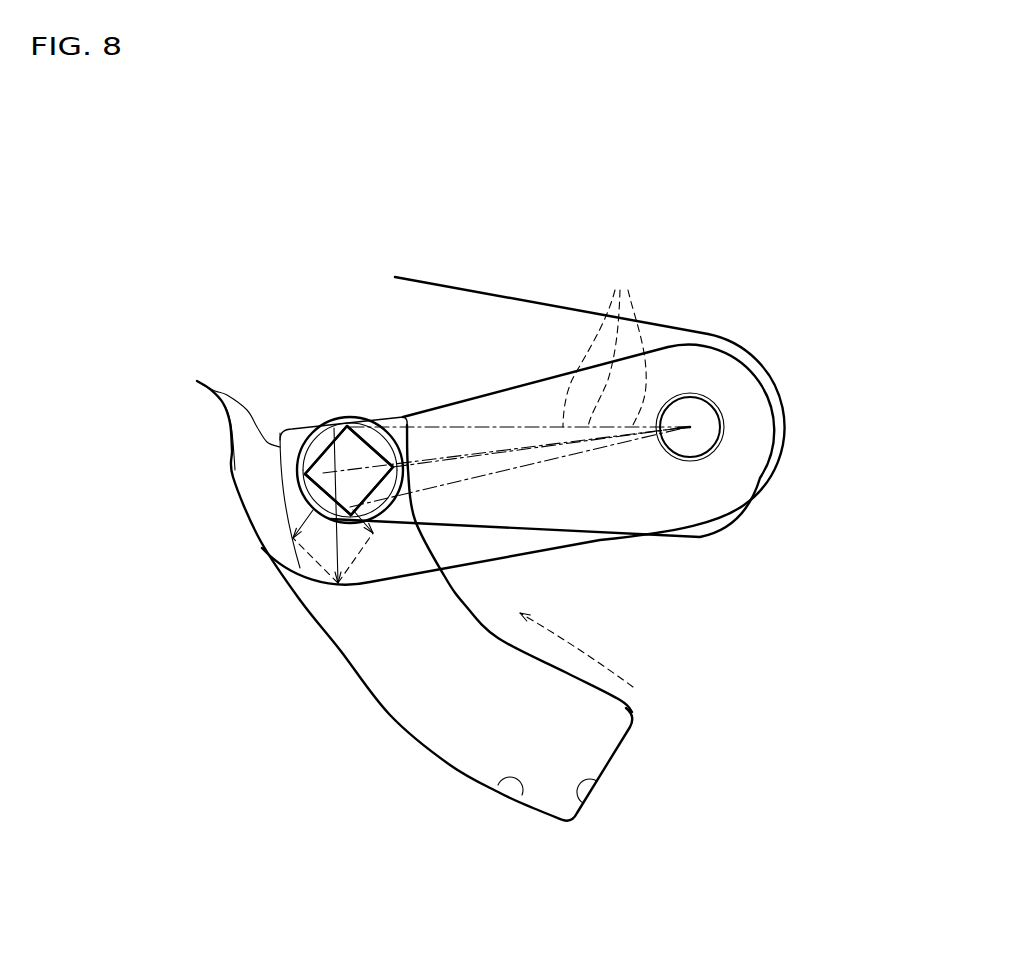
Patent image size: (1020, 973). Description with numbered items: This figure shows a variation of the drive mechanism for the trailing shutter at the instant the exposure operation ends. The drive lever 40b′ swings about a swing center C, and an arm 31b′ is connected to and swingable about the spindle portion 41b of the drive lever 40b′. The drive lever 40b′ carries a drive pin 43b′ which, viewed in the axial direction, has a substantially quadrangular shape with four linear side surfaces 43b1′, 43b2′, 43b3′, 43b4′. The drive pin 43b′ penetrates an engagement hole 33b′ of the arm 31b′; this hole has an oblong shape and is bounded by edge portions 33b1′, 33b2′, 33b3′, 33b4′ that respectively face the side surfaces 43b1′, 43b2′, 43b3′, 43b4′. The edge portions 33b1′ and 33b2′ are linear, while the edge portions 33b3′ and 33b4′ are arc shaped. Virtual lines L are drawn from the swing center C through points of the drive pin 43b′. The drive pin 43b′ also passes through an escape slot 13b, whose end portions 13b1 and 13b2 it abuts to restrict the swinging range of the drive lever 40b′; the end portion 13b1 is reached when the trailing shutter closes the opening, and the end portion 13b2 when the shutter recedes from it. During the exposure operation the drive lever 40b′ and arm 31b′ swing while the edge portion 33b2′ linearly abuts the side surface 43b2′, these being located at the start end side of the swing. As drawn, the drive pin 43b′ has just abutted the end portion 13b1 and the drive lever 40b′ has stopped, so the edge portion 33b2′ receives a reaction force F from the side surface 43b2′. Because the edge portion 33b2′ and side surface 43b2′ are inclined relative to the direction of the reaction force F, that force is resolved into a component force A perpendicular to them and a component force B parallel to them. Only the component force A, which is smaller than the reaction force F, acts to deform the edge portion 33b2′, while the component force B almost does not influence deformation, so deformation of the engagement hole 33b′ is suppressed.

The escape slot 13b is at (523, 800).
The end portion 13b1 is at (200, 387).
The end portion 13b2 is at (587, 803).
The arm 31b′ is at (220, 407).
The drive lever 40b′ is at (672, 343).
The engagement hole 33b′ is at (433, 420).
The edge portion 33b1′ is at (380, 417).
The edge portion 33b2′ is at (313, 477).
The edge portion 33b3′ is at (395, 468).
The edge portion 33b4′ is at (298, 462).
The drive pin 43b′ is at (357, 417).
The side surface 43b1′ is at (398, 417).
The side surface 43b2′ is at (317, 483).
The side surface 43b3′ is at (370, 512).
The side surface 43b4′ is at (340, 427).
The spindle portion 41b is at (713, 423).
The swing center C is at (690, 427).
The virtual line L is at (604, 344).
The reaction force F is at (339, 518).
The component force A is at (293, 536).
The component force B is at (373, 532).